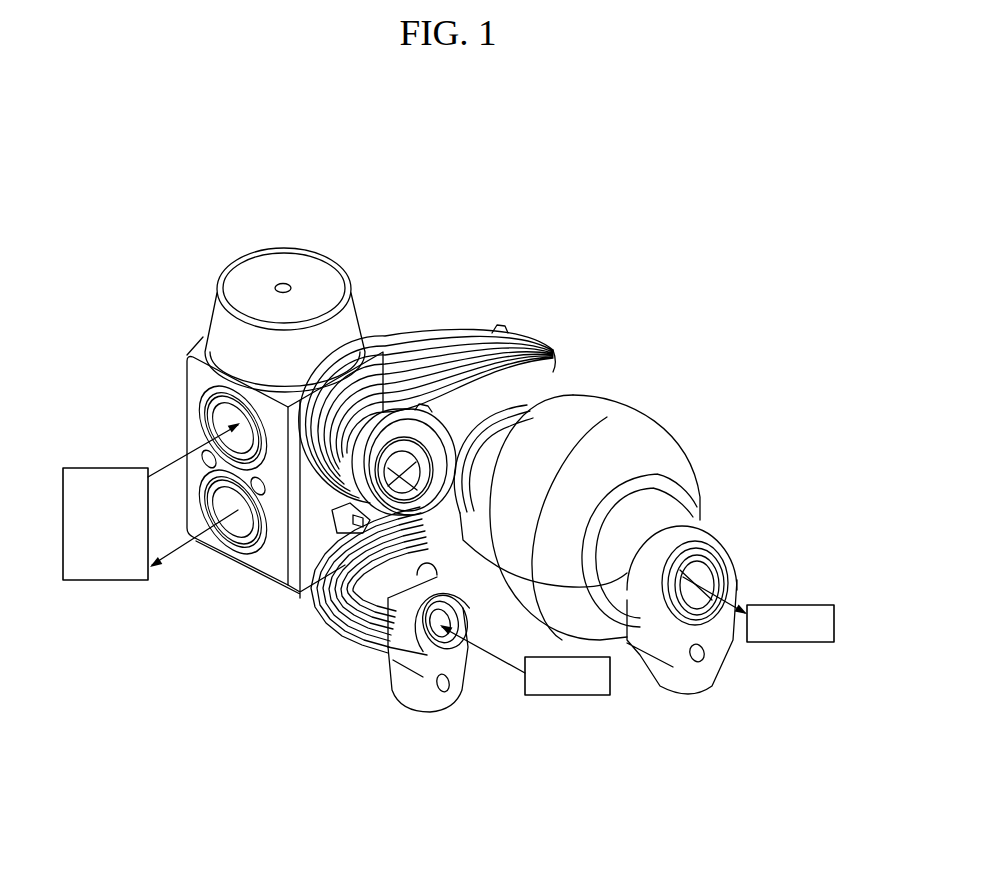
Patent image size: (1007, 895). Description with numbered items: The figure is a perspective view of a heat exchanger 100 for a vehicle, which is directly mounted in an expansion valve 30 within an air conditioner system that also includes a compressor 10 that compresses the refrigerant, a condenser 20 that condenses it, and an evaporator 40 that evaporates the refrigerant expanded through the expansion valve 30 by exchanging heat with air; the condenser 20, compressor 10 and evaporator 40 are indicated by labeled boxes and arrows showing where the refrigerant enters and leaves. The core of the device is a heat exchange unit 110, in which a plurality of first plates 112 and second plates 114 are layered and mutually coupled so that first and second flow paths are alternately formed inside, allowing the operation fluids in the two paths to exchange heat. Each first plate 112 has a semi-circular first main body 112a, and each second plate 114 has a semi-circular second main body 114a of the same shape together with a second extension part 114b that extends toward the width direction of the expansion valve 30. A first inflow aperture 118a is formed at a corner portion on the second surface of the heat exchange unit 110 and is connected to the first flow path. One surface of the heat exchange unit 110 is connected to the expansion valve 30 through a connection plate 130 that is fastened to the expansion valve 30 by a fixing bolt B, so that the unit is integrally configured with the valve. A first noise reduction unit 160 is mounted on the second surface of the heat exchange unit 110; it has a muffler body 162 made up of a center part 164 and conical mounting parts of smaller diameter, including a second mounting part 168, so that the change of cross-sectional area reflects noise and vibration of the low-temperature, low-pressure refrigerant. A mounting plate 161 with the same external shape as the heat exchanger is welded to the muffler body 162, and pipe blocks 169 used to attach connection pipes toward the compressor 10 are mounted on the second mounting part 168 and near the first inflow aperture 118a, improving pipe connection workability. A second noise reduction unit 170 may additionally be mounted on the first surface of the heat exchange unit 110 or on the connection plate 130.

The compressor 10 is at (803, 605).
The condenser 20 is at (577, 697).
The expansion valve 30 is at (190, 373).
The evaporator 40 is at (128, 582).
The heat exchanger for a vehicle 100 is at (681, 233).
The heat exchange unit 110 is at (549, 335).
The first plate 112 is at (377, 660).
The first main body 112a is at (363, 630).
The second plate 114 is at (493, 262).
The second main body 114a is at (441, 387).
The second extension part 114b is at (412, 347).
The first inflow aperture 118a is at (450, 657).
The connection plate 130 is at (382, 435).
The first noise reduction unit 160 is at (672, 392).
The mounting plate 161 is at (556, 382).
The muffler body 162 is at (694, 452).
The center part 164 is at (607, 415).
The second mounting part 168 is at (724, 548).
The pipe block 169 is at (410, 693).
The second noise reduction unit 170 is at (503, 328).
The fixing bolt B is at (337, 517).